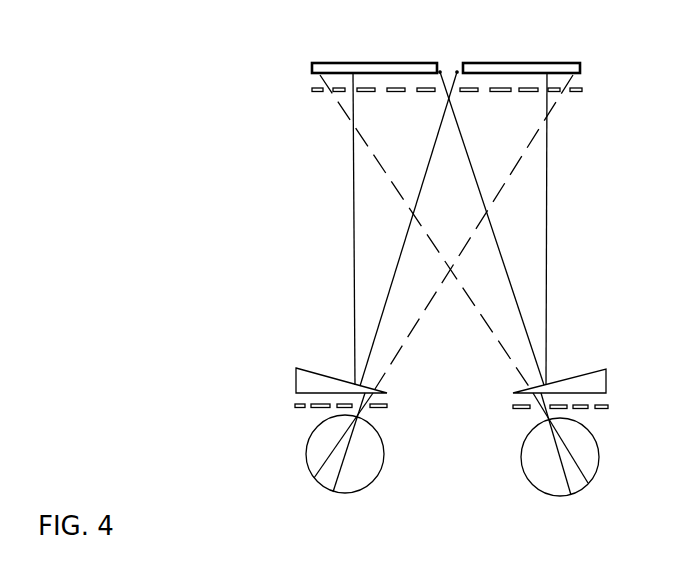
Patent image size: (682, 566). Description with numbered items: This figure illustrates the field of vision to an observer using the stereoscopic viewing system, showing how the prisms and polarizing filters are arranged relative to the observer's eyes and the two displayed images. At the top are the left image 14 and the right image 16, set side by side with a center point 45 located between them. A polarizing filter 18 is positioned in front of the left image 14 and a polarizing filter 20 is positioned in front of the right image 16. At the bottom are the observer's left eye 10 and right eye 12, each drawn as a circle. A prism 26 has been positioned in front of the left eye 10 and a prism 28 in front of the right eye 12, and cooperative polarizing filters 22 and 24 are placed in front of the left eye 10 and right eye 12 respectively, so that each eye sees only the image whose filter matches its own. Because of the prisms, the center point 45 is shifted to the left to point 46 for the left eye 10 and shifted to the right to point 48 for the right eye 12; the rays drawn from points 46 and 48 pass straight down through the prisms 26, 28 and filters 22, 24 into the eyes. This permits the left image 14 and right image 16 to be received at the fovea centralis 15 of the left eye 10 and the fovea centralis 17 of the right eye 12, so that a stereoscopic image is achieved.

The left eye 10 is at (303, 459).
The right eye 12 is at (603, 453).
The left image 14 is at (334, 63).
The fovea centralis 15 is at (333, 494).
The right image 16 is at (578, 63).
The fovea centralis 17 is at (572, 497).
The polarizing filter 18 is at (339, 92).
The polarizing filter 20 is at (578, 93).
The cooperative polarizing filter 22 is at (300, 406).
The cooperative polarizing filter 24 is at (603, 410).
The prism 26 is at (296, 380).
The prism 28 is at (587, 373).
The center point 45 is at (441, 71).
The point 46 is at (352, 72).
The point 48 is at (547, 72).